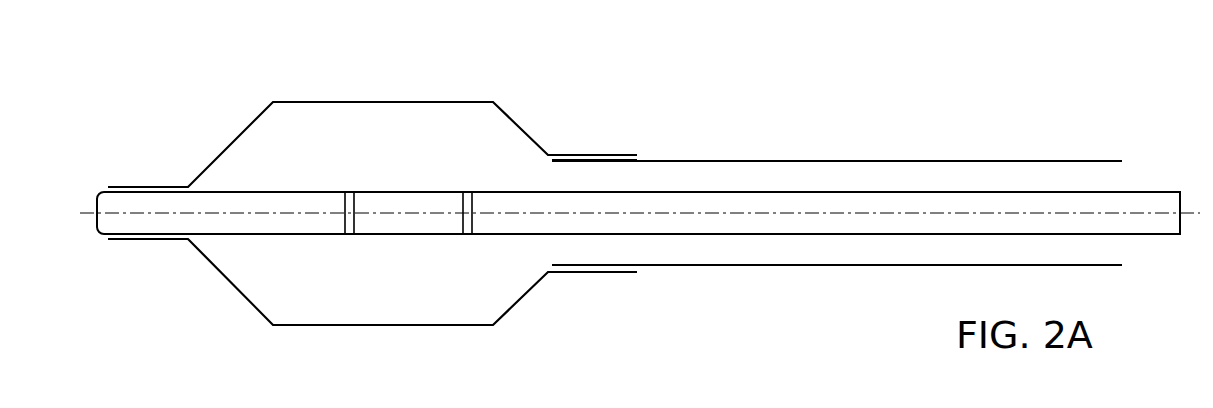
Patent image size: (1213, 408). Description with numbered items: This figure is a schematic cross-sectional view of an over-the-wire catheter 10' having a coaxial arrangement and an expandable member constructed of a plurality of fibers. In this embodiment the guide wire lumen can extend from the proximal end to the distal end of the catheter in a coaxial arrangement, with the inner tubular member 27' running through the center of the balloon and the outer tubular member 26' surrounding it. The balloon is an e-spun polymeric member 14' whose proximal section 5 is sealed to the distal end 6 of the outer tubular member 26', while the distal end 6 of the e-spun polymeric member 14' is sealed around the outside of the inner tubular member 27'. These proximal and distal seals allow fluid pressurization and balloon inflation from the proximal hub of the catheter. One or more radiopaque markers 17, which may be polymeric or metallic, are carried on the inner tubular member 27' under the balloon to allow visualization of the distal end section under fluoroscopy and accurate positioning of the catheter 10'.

The catheter 10' is at (631, 206).
The e-spun polymeric member 14' is at (357, 175).
The proximal section 5 is at (602, 157).
The distal end 6 is at (138, 187).
The radiopaque markers 17 is at (353, 236).
The outer tubular member 26' is at (837, 184).
The inner tubular member 27' is at (638, 170).